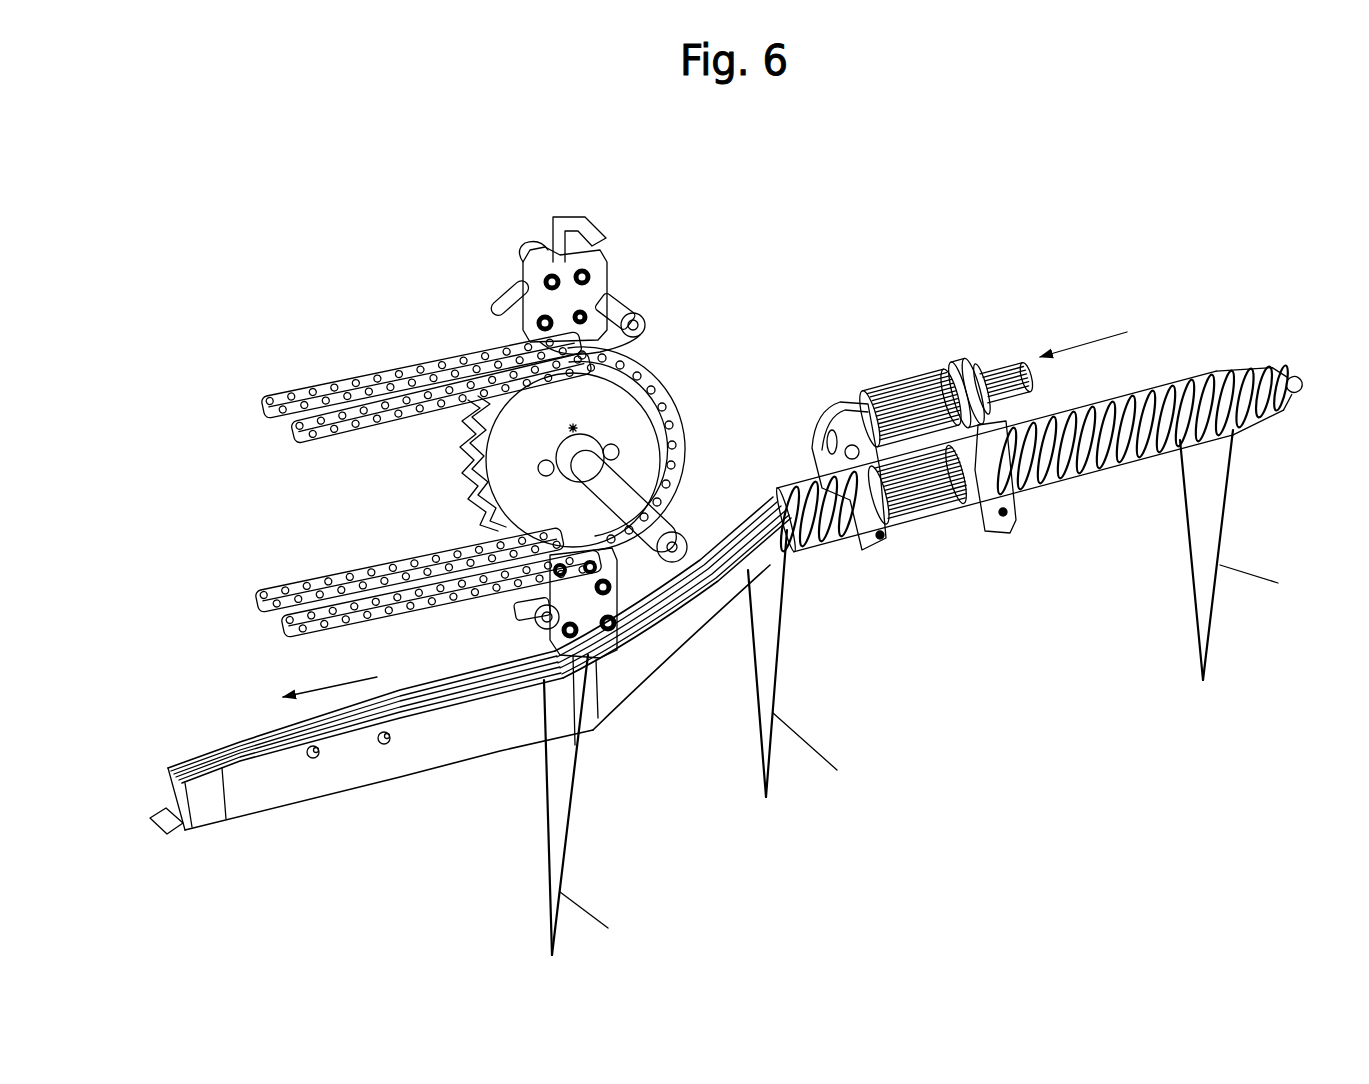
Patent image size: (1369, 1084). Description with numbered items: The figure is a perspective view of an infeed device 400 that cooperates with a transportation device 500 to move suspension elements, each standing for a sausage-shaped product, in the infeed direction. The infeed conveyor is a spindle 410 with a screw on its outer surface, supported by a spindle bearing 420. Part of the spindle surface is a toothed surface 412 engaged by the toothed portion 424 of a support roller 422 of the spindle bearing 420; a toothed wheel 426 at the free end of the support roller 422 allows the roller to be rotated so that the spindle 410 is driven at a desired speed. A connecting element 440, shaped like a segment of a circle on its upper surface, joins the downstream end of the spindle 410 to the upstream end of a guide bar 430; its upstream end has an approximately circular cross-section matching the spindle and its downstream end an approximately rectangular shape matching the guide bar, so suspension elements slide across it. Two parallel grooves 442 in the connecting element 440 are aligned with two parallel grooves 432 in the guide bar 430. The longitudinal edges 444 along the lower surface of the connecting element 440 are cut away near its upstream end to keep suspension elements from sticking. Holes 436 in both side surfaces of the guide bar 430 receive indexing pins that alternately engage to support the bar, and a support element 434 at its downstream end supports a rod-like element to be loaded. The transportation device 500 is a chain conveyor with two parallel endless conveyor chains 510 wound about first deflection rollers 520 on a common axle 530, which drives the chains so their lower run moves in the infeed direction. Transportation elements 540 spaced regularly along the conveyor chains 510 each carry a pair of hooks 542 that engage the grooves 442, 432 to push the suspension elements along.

The infeed device 400 is at (1067, 217).
The spindle 410 is at (1163, 388).
The toothed surface 412 is at (940, 495).
The spindle bearing 420 is at (894, 380).
The support roller 422 is at (957, 392).
The toothed portion 424 is at (912, 392).
The toothed wheel 426 is at (1003, 383).
The guide bar 430 is at (502, 722).
The grooves 432 is at (287, 731).
The support element 434 is at (168, 823).
The holes 436 is at (382, 744).
The connecting element 440 is at (627, 680).
The grooves 442 is at (699, 570).
The longitudinal edges 444 is at (699, 633).
The transportation device 500 is at (297, 300).
The conveyor chains 510 is at (300, 422).
The first deflection rollers 520 is at (510, 467).
The axle 530 is at (617, 490).
The transportation elements 540 is at (528, 245).
The hooks 542 is at (583, 220).